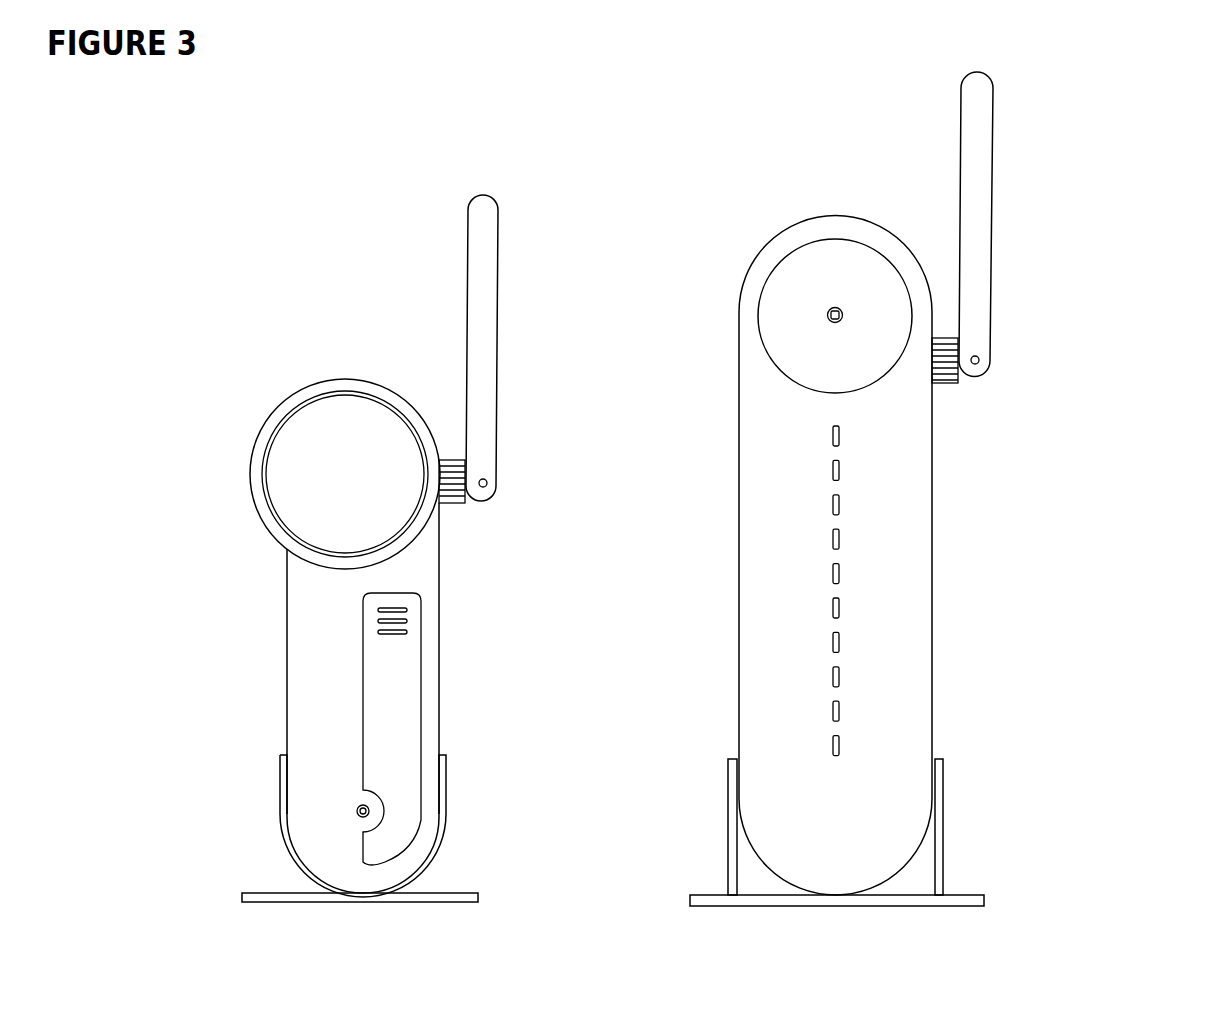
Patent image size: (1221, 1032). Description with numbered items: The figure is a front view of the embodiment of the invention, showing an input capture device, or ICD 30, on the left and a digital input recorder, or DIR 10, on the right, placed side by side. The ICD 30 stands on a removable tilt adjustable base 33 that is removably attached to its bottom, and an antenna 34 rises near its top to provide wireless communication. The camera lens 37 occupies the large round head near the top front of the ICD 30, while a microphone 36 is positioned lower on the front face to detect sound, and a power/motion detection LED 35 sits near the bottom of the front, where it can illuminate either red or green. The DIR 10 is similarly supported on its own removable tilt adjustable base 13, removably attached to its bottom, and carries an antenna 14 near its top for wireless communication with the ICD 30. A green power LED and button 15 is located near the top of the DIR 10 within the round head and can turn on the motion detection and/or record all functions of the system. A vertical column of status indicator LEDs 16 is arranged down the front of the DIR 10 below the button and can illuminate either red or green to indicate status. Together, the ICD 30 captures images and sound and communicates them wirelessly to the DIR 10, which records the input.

The digital input recorder 10 is at (780, 203).
The removable tilt adjustable base 13 is at (1063, 850).
The antenna 14 is at (1124, 219).
The green power LED and button 15 is at (805, 315).
The Status Indicator LEDs 16 is at (805, 466).
The input capture device 30 is at (267, 371).
The removable tilt adjustable base 33 is at (582, 846).
The antenna 34 is at (632, 237).
The power/motion detection LED 35 is at (345, 810).
The microphone 36 is at (370, 618).
The camera lens 37 is at (302, 473).